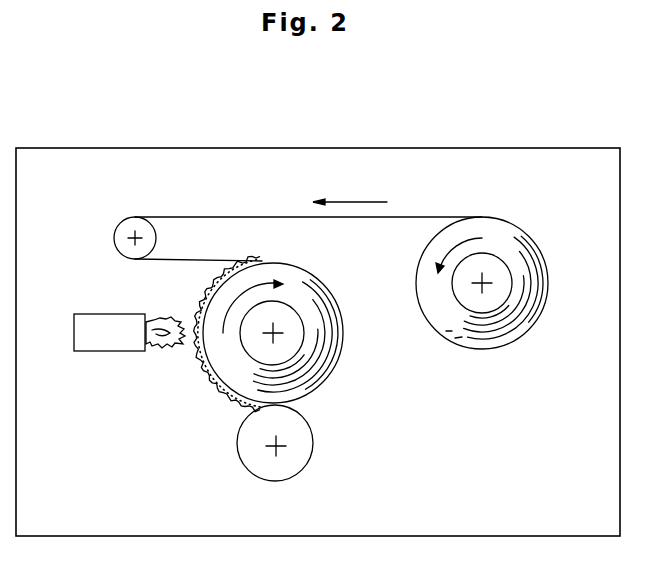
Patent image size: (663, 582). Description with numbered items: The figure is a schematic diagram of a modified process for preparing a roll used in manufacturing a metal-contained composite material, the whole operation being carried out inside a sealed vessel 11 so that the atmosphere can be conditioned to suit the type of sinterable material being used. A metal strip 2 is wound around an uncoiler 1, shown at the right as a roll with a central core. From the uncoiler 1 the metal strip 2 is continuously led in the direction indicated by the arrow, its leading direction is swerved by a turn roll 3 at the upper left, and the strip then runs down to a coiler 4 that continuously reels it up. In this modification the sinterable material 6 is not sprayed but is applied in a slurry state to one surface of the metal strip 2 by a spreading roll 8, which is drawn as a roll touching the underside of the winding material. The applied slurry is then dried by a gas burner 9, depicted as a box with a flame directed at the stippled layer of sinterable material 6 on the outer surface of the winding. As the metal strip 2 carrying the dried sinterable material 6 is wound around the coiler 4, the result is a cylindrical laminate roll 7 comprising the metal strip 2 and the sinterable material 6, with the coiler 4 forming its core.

The uncoiler 1 is at (479, 300).
The metal strip 2 is at (216, 217).
The turn roll 3 is at (142, 222).
The coiler 4 is at (293, 338).
The sinterable material 6 is at (200, 370).
The cylindrical laminate roll 7 is at (318, 393).
The spreading roll 8 is at (288, 455).
The gas burner 9 is at (105, 339).
The sealed vessel 11 is at (545, 148).